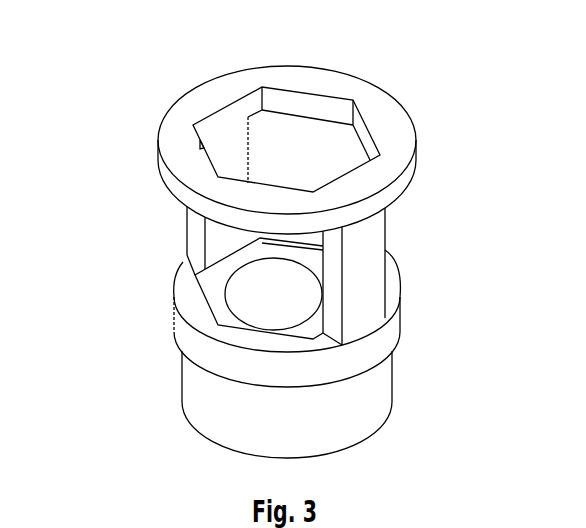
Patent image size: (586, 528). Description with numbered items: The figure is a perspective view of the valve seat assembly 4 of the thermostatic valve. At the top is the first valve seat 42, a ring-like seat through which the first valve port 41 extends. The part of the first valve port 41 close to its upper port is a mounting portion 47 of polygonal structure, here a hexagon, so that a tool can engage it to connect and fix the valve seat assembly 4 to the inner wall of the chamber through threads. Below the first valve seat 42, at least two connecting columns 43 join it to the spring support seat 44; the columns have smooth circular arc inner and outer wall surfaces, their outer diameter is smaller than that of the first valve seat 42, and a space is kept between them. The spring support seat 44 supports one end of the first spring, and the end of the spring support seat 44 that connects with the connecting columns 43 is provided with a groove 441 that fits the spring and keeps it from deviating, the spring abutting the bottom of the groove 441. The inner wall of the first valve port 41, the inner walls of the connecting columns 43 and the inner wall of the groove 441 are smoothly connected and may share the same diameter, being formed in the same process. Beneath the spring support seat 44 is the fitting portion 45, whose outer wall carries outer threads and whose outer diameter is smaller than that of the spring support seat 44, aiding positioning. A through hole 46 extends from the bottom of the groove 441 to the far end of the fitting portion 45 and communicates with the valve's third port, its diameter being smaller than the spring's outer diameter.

The valve seat assembly 4 is at (122, 57).
The first valve port 41 is at (288, 132).
The first valve seat 42 is at (387, 118).
The connecting column 43 is at (365, 263).
The spring support seat 44 is at (195, 342).
The groove 441 is at (215, 285).
The fitting portion 45 is at (240, 418).
The through hole 46 is at (278, 302).
The mounting portion 47 is at (273, 100).